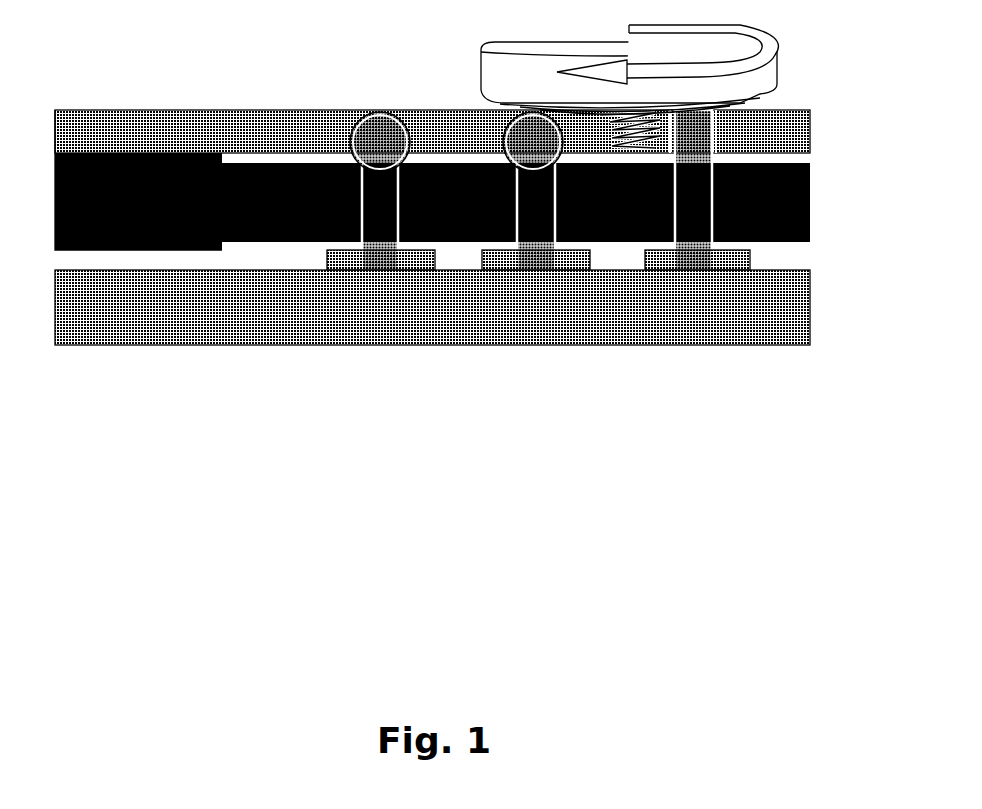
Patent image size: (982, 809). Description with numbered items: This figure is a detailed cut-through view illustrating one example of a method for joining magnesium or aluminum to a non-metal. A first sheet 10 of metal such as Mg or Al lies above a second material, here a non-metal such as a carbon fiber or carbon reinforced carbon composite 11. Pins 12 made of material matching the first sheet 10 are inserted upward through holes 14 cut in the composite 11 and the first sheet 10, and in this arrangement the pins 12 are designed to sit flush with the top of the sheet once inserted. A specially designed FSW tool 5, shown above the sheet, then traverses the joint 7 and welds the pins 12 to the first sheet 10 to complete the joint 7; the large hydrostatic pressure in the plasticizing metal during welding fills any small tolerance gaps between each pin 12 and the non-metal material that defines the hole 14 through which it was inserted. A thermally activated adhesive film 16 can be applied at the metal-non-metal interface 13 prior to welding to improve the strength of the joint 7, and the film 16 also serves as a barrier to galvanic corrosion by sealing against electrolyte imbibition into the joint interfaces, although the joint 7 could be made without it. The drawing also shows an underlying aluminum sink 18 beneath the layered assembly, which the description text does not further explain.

The FSW tool 5 is at (777, 66).
The joint 7 is at (377, 130).
The first sheet 10 is at (80, 117).
The carbon fiber or carbon reinforced carbon composite 11 is at (55, 250).
The pins 12 is at (743, 262).
The metal-non-metal interface 13 is at (55, 153).
The holes 14 is at (725, 135).
The thermally activated adhesive film 16 is at (238, 153).
The aluminum heat sink 18 is at (125, 333).